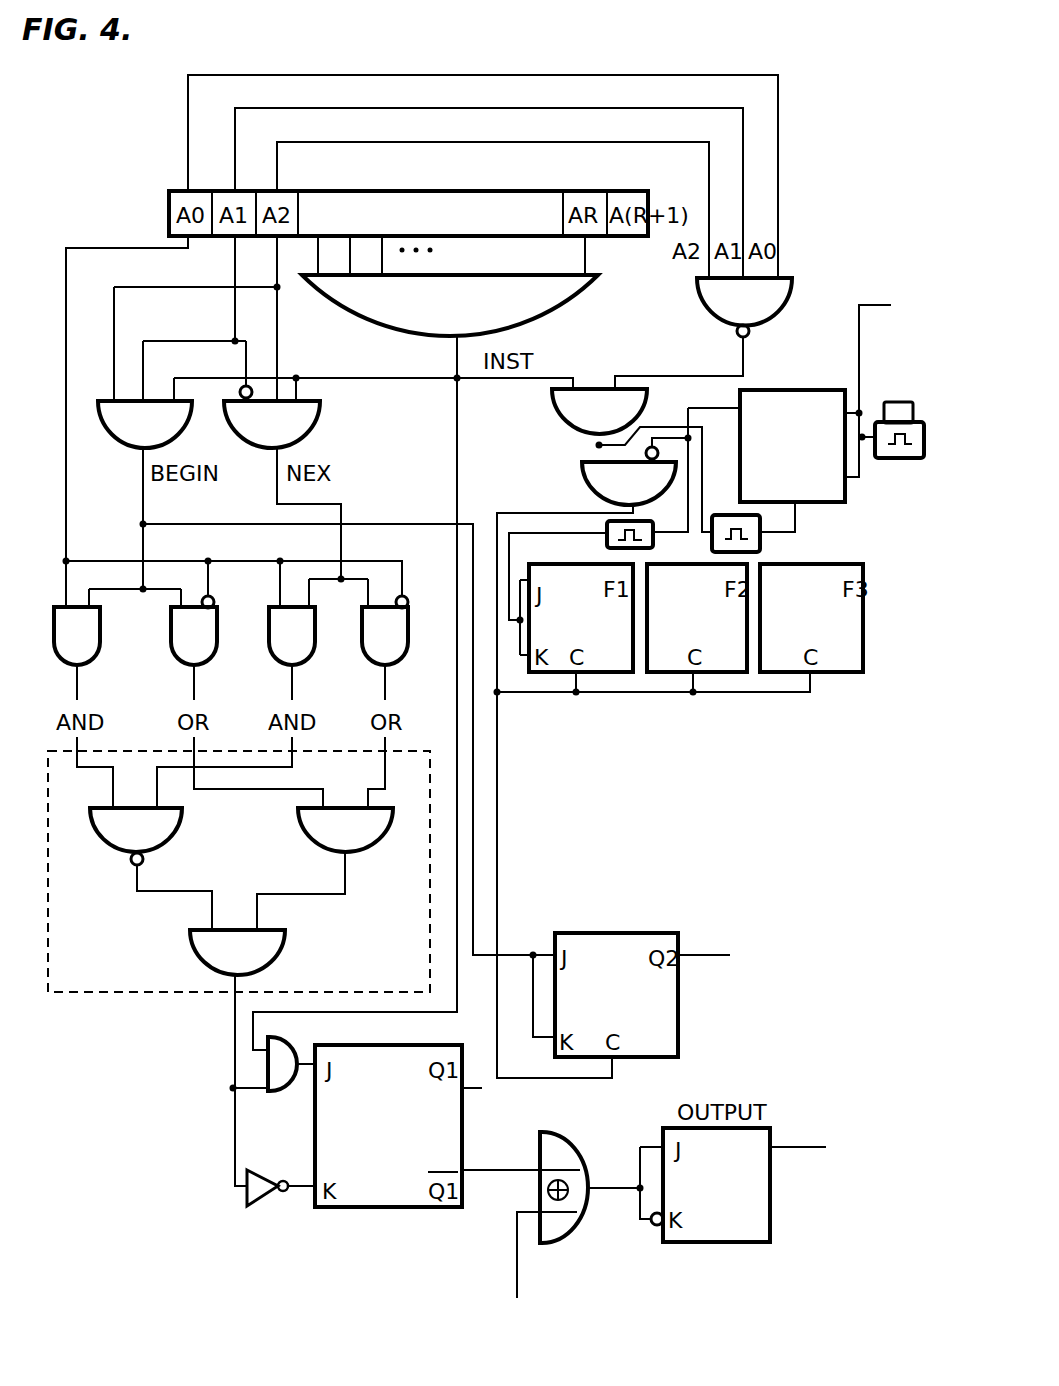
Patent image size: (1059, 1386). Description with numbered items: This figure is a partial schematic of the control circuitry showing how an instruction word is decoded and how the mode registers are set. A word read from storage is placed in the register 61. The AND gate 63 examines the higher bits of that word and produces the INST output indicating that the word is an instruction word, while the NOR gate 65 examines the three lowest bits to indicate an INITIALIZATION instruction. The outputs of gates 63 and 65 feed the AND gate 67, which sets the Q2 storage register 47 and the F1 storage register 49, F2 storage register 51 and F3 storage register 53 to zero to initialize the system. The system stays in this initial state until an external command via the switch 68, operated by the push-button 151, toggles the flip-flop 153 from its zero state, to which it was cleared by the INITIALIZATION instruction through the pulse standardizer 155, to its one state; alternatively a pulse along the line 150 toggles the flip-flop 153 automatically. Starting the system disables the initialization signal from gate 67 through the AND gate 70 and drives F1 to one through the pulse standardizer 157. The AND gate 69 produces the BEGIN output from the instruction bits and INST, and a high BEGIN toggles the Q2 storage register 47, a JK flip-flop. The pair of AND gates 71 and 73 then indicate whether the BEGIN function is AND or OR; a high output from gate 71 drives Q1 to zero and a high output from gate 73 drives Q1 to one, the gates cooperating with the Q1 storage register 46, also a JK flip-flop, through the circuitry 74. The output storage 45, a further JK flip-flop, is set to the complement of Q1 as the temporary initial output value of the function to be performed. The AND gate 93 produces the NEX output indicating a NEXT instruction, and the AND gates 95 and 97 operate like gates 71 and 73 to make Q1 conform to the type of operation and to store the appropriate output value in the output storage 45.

The register 61 is at (388, 195).
The AND gate 63 is at (456, 319).
The NOR gate 65 is at (760, 310).
The AND gate 67 is at (615, 421).
The AND gate 69 is at (161, 433).
The AND gate 70 is at (643, 494).
The AND gate 71 is at (93, 641).
The AND gate 73 is at (210, 641).
The circuitry 74 is at (110, 913).
The AND gate 93 is at (286, 433).
The AND gate 95 is at (308, 641).
The AND gate 97 is at (401, 641).
The Q1 storage register 46 is at (403, 1145).
The Q2 storage register 47 is at (623, 1018).
The output storage 45 is at (731, 1200).
The F1 storage register 49 is at (594, 634).
The F2 storage register 51 is at (707, 634).
The F3 storage register 53 is at (826, 634).
The line 150 is at (866, 305).
The push-button 151 is at (912, 352).
The flip-flop 153 is at (817, 455).
The pulse standardizer 155 is at (763, 540).
The pulse standardizer 157 is at (607, 540).
The switch 68 is at (898, 458).